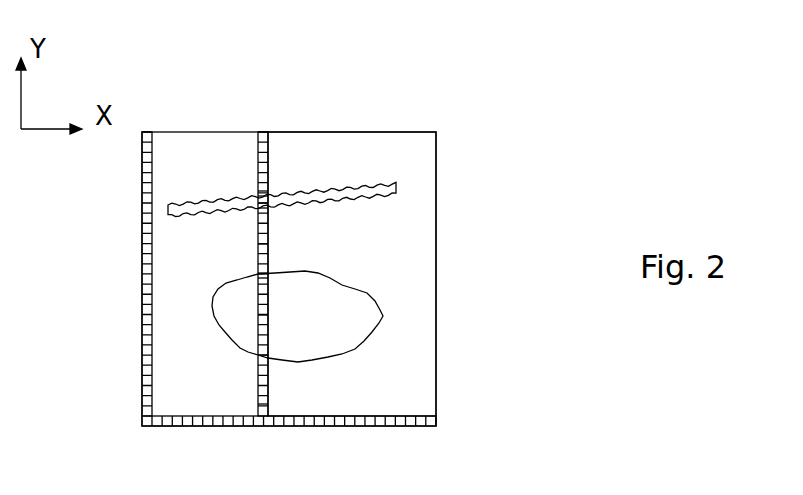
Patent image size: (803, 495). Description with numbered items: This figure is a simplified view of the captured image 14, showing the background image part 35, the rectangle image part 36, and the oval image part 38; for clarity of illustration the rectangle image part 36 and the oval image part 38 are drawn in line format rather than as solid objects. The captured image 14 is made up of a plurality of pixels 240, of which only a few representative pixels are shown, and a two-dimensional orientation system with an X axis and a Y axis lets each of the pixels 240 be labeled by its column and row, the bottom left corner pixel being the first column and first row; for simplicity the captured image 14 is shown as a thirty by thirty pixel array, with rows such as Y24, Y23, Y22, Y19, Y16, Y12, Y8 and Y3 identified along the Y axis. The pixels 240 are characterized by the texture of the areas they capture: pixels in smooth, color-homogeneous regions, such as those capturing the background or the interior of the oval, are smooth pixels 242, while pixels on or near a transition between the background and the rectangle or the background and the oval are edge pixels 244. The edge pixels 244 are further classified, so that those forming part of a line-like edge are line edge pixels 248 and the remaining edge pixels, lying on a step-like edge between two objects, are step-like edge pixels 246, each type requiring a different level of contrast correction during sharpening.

The captured image 14 is at (437, 206).
The background image part 35 is at (403, 156).
The rectangle image part 36 is at (331, 192).
The oval image part 38 is at (381, 312).
The pixels 240 is at (142, 406).
The smooth pixels 242 is at (262, 396).
The edge pixels 244 is at (267, 356).
The step-like edge pixel 246 is at (263, 273).
The line edge pixel 248 is at (265, 206).
The sensor row Y24 is at (263, 191).
The sensor row Y23 is at (263, 196).
The sensor row Y22 is at (263, 208).
The sensor row Y19 is at (263, 244).
The sensor row Y16 is at (263, 273).
The sensor row Y12 is at (263, 315).
The sensor row Y8 is at (263, 355).
The sensor row Y3 is at (263, 404).